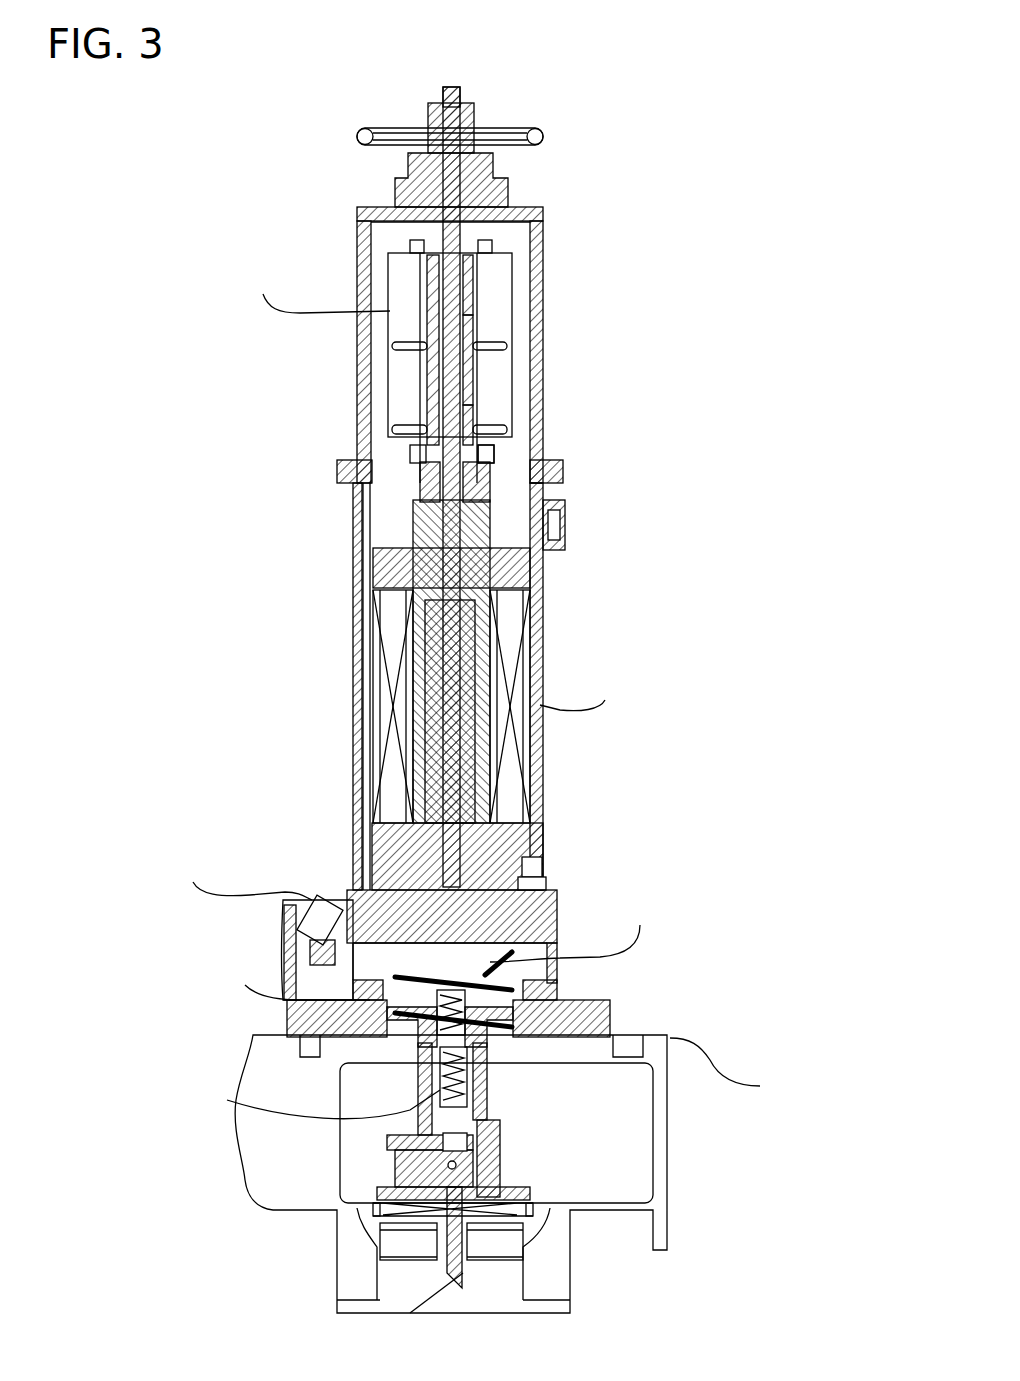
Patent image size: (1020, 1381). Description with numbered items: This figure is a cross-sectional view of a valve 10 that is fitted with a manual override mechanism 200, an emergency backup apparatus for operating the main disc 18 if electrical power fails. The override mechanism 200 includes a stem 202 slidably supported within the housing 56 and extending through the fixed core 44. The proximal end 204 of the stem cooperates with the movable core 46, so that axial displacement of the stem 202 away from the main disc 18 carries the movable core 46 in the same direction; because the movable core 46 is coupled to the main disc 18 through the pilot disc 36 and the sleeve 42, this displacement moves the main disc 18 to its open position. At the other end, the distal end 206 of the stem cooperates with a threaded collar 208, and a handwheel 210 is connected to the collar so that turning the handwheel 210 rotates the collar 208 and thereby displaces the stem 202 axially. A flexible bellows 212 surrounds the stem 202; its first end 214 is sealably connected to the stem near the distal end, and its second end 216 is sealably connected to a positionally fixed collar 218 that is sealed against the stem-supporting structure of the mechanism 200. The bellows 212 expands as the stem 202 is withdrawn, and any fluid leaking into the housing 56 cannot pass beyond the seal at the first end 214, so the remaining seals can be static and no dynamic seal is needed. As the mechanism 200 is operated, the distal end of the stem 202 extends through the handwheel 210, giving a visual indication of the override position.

The valve 10 is at (722, 206).
The manual override mechanism 200 is at (182, 130).
The stem 202 is at (430, 376).
The proximal end 204 is at (450, 778).
The distal end 206 is at (443, 88).
The threaded collar 208 is at (463, 92).
The handwheel 210 is at (365, 137).
The flexible bellows 212 is at (470, 378).
The first end 214 is at (470, 283).
The second end 216 is at (475, 420).
The positionally fixed collar 218 is at (478, 462).
The fixed core 44 is at (425, 600).
The movable core 46 is at (430, 725).
The housing 56 is at (540, 757).
The pilot disc 36 is at (455, 950).
The sleeve 42 is at (545, 1005).
The main disc 18 is at (380, 1160).